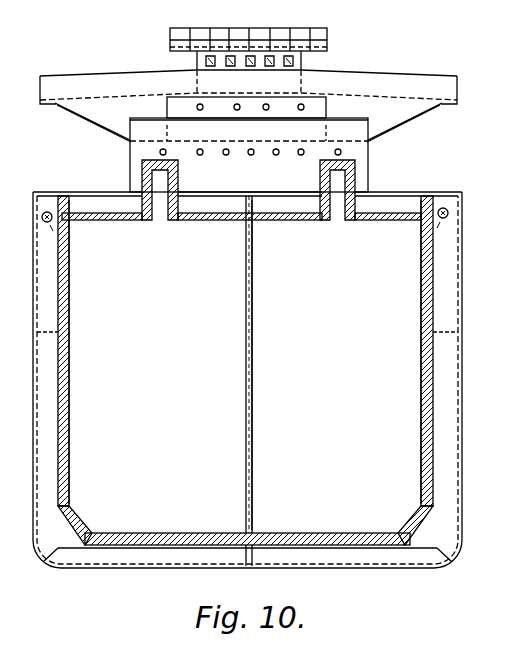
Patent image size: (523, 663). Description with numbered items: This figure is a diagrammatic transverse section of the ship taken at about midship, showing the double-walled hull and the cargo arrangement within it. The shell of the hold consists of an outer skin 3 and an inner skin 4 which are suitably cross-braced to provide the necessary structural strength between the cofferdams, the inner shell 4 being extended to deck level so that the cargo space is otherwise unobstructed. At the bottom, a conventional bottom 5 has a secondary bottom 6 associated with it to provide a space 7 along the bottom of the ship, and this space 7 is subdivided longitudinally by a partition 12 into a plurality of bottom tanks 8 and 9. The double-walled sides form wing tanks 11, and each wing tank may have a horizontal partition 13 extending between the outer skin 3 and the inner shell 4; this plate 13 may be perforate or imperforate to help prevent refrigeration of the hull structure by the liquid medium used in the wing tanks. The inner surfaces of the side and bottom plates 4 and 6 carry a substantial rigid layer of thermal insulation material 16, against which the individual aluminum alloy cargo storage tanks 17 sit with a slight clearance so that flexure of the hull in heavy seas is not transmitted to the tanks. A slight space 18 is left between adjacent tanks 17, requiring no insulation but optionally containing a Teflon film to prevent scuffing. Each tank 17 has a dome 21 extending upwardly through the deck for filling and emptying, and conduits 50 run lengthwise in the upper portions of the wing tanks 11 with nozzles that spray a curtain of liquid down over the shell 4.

The outer skin 3 is at (462, 390).
The inner skin 4 is at (58, 361).
The bottom 5 is at (430, 560).
The secondary bottom 6 is at (383, 546).
The space 7 is at (315, 556).
The bottom tank 8 is at (163, 551).
The bottom tank 9 is at (272, 556).
The wing tank 11 is at (41, 418).
The partition 12 is at (245, 554).
The horizontal partition 13 is at (445, 332).
The thermal insulation material 16 is at (69, 391).
The cargo storage tank 17 is at (70, 429).
The space 18 is at (246, 369).
The dome 21 is at (142, 178).
The conduit 50 is at (42, 218).